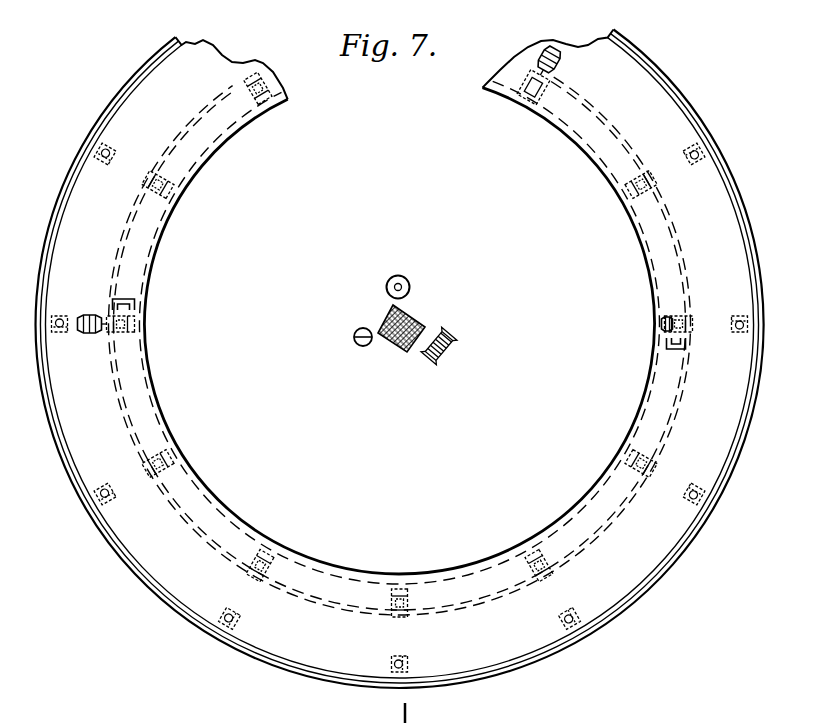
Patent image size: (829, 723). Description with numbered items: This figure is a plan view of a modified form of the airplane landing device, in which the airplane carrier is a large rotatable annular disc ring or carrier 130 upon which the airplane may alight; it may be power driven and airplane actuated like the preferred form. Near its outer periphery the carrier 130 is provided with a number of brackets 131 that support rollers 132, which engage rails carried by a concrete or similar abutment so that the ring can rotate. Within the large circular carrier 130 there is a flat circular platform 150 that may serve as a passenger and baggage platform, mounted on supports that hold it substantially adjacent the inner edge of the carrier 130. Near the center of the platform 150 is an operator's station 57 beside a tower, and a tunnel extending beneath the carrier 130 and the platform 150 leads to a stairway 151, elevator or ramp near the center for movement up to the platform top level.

The annular disc ring or carrier 130 is at (100, 272).
The brackets 131 is at (110, 151).
The rollers 132 is at (103, 172).
The flat circular platform 150 is at (400, 331).
The stairway 151 is at (453, 350).
The operator's station 57 is at (413, 323).